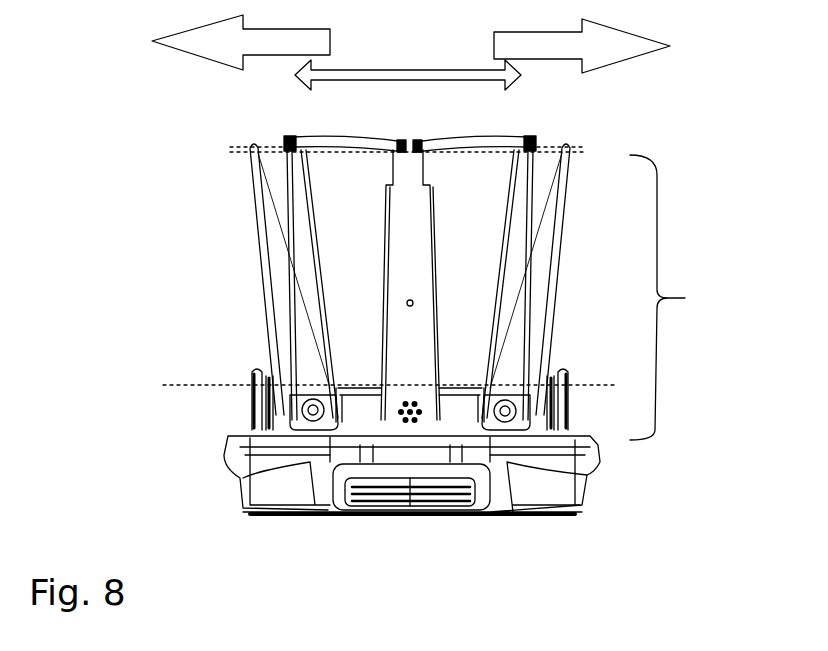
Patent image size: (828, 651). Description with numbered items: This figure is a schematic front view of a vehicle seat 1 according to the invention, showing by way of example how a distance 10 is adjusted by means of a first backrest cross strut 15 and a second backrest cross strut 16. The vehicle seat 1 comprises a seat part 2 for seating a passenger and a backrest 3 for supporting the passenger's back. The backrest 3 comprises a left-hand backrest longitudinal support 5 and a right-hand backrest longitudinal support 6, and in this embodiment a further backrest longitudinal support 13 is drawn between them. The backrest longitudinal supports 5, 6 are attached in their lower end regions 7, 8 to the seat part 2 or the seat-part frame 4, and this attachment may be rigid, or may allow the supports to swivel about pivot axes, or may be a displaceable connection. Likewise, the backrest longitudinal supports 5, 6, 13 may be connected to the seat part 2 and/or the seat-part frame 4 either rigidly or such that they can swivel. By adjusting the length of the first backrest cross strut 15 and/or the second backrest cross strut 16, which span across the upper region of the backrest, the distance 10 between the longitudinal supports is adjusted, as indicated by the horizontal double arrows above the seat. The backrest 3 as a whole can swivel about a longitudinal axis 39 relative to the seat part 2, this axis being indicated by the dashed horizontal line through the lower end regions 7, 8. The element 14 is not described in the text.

The vehicle seat 1 is at (684, 120).
The seat part 2 is at (556, 492).
The backrest 3 is at (665, 297).
The seat-part frame 4 is at (562, 372).
The left-hand backrest longitudinal support 5 is at (268, 234).
The right-hand backrest longitudinal support 6 is at (545, 272).
The lower end region 7 is at (300, 410).
The lower end region 8 is at (590, 444).
The distance 10 is at (416, 70).
The backrest longitudinal support 13 is at (415, 236).
The holes 14 is at (420, 392).
The first backrest cross strut 15 is at (345, 140).
The second backrest cross strut 16 is at (462, 140).
The longitudinal axis 39 is at (190, 385).